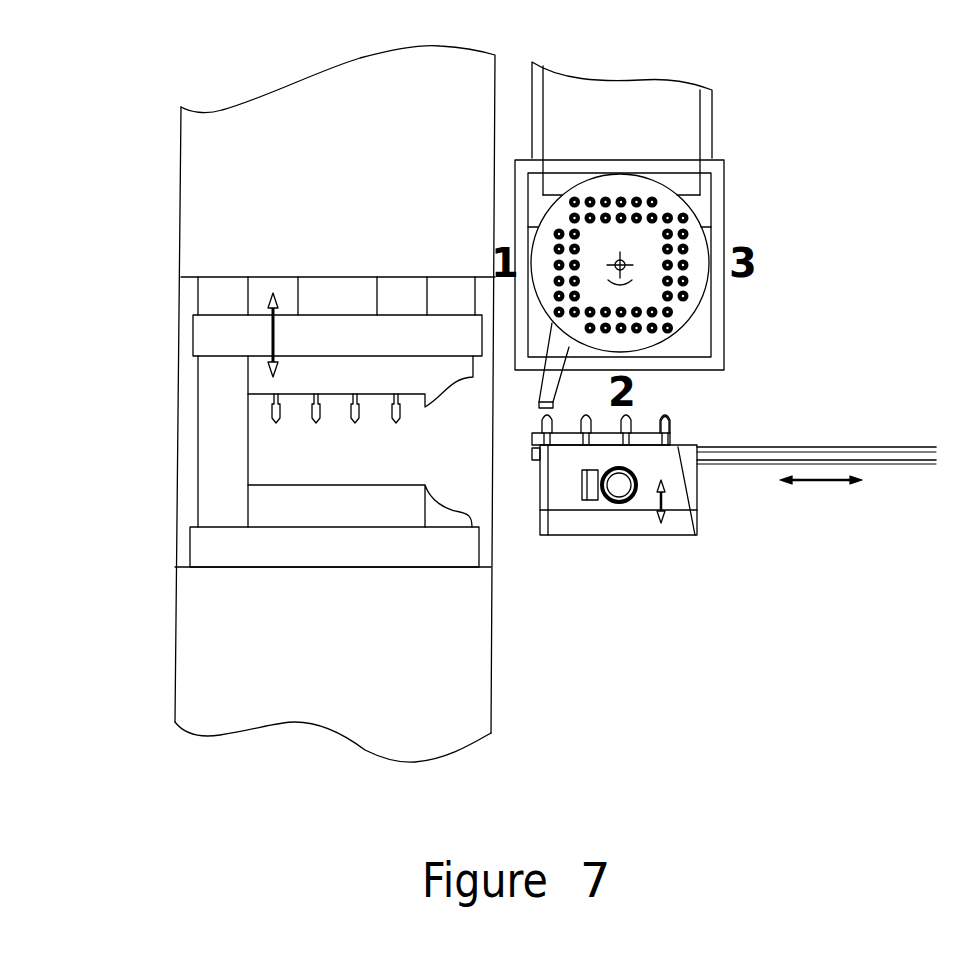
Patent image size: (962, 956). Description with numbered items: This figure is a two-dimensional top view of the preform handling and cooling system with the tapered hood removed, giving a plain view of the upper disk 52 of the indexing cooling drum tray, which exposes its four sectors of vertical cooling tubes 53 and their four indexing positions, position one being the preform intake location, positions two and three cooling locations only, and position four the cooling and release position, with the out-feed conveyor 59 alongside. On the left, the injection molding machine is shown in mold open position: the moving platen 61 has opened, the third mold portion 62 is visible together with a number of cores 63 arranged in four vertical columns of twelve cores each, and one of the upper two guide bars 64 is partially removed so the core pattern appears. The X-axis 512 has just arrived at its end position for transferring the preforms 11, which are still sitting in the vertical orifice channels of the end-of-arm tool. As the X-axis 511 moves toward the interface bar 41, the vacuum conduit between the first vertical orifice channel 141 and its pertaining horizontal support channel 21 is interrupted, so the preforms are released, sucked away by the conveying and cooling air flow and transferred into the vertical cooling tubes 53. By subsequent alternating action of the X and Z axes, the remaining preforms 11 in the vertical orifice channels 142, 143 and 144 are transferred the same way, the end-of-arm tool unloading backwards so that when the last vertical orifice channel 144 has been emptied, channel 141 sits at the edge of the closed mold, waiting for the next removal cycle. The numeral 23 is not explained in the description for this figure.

The preforms 11 is at (643, 445).
The horizontal support channel 21 is at (668, 445).
The nozzle head 23 is at (666, 414).
The interface bar 41 is at (553, 402).
The upper disk 52 is at (695, 242).
The vertical cooling tubes 53 is at (685, 220).
The out-feed conveyor 59 is at (655, 142).
The moving platen 61 is at (270, 333).
The third mold portion 62 is at (255, 380).
The cores 63 is at (275, 413).
The upper guide bars 64 is at (222, 497).
The first vertical orifice channel 141 is at (547, 445).
The vertical orifice channel 142 is at (586, 445).
The vertical orifice channel 143 is at (630, 445).
The last vertical orifice channel 144 is at (671, 427).
The X-axis 511 is at (695, 535).
The X-axis 512 is at (815, 483).